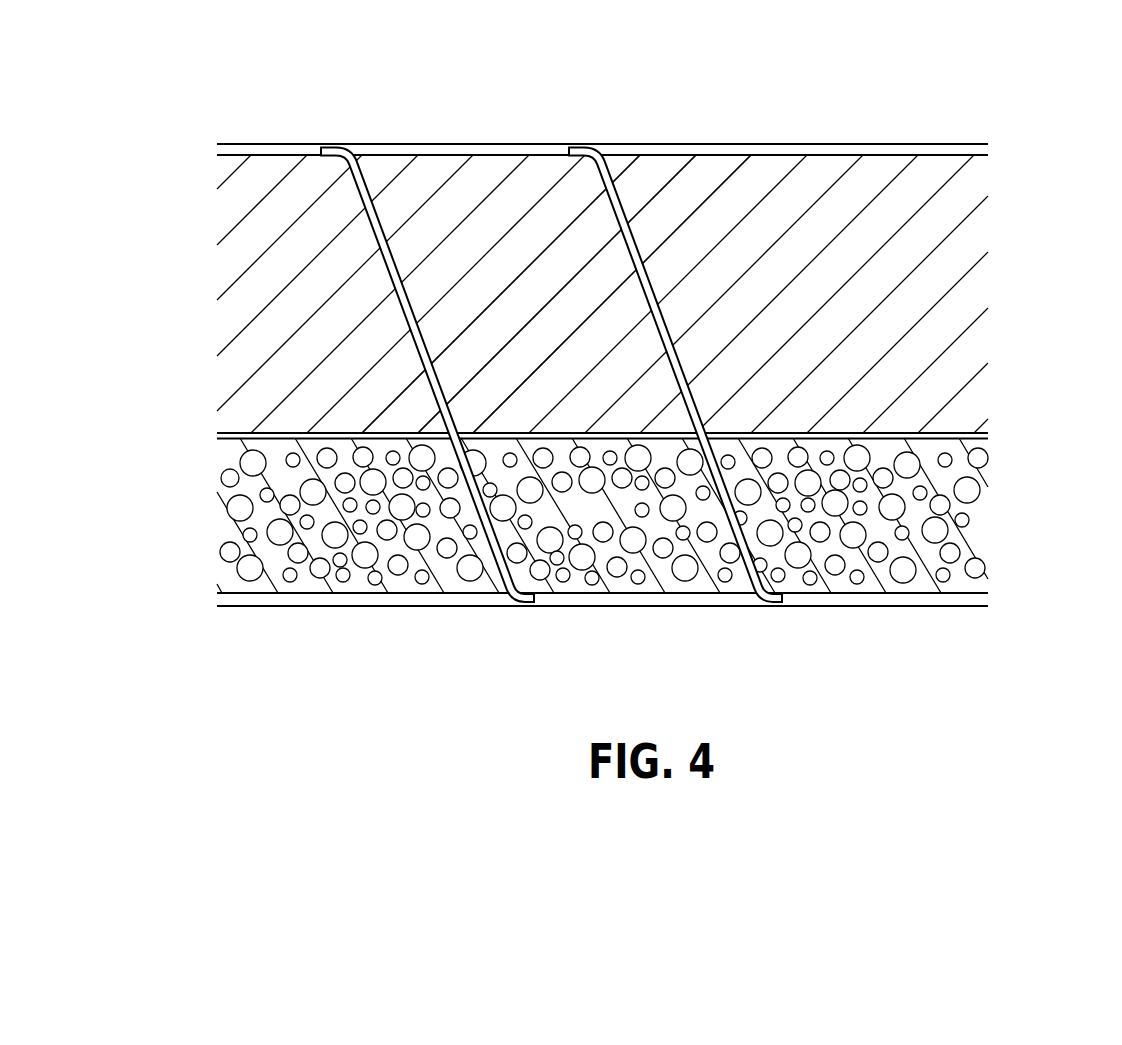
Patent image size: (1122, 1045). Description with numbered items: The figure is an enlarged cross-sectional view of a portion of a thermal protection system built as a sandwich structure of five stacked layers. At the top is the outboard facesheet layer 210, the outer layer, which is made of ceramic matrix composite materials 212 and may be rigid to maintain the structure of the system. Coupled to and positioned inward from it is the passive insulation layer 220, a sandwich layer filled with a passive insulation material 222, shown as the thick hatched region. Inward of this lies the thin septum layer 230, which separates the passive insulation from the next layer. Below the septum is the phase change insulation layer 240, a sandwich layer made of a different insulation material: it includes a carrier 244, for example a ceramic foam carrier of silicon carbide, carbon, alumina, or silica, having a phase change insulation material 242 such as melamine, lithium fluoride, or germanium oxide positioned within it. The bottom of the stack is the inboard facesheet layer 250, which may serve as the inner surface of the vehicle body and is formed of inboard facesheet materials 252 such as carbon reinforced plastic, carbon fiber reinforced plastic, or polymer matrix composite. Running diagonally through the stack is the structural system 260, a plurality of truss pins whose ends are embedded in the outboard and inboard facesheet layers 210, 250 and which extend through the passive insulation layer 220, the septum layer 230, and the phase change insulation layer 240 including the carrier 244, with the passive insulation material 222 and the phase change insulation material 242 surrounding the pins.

The outboard facesheet layer 210 is at (1013, 149).
The ceramic matrix composite materials 212 is at (720, 150).
The passive insulation layer 220 is at (1010, 160).
The passive insulation material 222 is at (598, 344).
The septum layer 230 is at (1004, 434).
The phase change insulation layer 240 is at (1010, 442).
The phase change insulation material 242 is at (630, 522).
The carrier 244 is at (768, 515).
The inboard facesheet layer 250 is at (1013, 603).
The inboard facesheet materials 252 is at (858, 600).
The structural system 260 is at (385, 258).